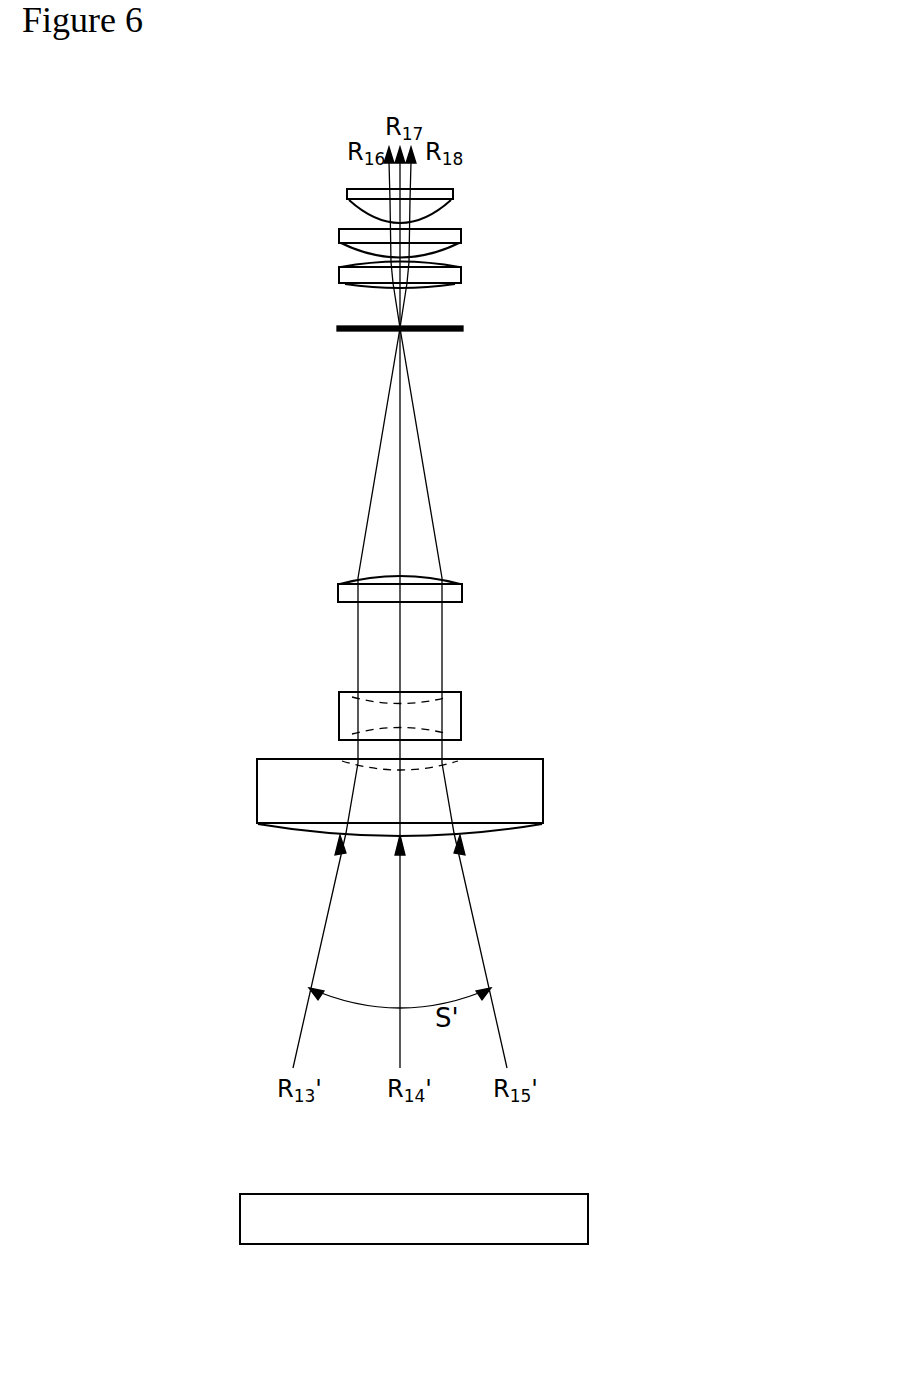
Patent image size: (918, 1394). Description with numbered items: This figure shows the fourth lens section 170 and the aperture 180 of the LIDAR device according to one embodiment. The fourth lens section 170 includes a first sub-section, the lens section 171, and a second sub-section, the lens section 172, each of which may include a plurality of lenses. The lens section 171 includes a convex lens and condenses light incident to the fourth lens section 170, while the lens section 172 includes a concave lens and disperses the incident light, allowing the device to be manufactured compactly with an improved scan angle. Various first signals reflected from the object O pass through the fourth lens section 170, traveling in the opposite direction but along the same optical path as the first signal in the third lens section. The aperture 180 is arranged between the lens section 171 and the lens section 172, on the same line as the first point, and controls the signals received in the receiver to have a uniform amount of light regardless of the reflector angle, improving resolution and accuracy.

The fourth lens section 170 is at (270, 213).
The 4-1 lens section 171 is at (334, 188).
The 4-2 lens section 172 is at (256, 573).
The aperture 180 is at (463, 328).
The object O is at (588, 1218).